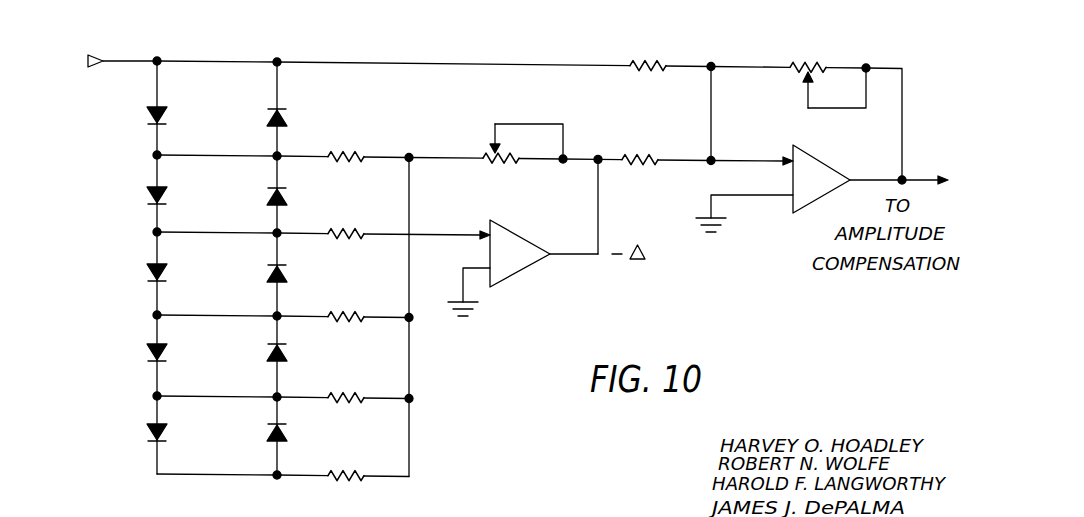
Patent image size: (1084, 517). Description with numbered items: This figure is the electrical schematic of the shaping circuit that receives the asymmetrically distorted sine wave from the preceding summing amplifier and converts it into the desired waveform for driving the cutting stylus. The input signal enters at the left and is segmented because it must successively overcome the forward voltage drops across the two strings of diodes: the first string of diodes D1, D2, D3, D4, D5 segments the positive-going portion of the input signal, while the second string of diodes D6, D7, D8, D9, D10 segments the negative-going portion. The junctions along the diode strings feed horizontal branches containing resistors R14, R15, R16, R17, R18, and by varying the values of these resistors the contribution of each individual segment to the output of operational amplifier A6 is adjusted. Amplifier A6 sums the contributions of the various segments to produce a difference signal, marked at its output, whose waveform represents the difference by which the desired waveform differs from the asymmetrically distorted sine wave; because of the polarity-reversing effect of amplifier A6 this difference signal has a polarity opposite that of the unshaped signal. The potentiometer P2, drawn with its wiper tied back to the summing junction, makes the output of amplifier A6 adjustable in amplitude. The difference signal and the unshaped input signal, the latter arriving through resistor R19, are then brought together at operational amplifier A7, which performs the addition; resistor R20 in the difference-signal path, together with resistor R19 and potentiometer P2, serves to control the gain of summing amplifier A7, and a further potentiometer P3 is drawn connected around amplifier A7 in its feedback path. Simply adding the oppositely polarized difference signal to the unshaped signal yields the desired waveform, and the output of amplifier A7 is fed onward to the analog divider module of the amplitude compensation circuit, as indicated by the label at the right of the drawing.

The diode D1 is at (145, 113).
The diode D2 is at (145, 196).
The diode D3 is at (145, 273).
The diode D4 is at (145, 353).
The diode D5 is at (146, 433).
The diode D6 is at (266, 119).
The diode D7 is at (266, 197).
The diode D8 is at (266, 273).
The diode D9 is at (266, 353).
The diode D10 is at (267, 433).
The resistor R14 is at (348, 152).
The resistor R15 is at (348, 230).
The resistor R16 is at (348, 310).
The resistor R17 is at (348, 390).
The resistor R18 is at (348, 472).
The resistor R19 is at (649, 60).
The resistor R20 is at (642, 152).
The potentiometer P2 is at (540, 152).
The potentiometer P3 is at (809, 60).
The operational amplifier A6 is at (520, 253).
The operational amplifier A7 is at (821, 179).